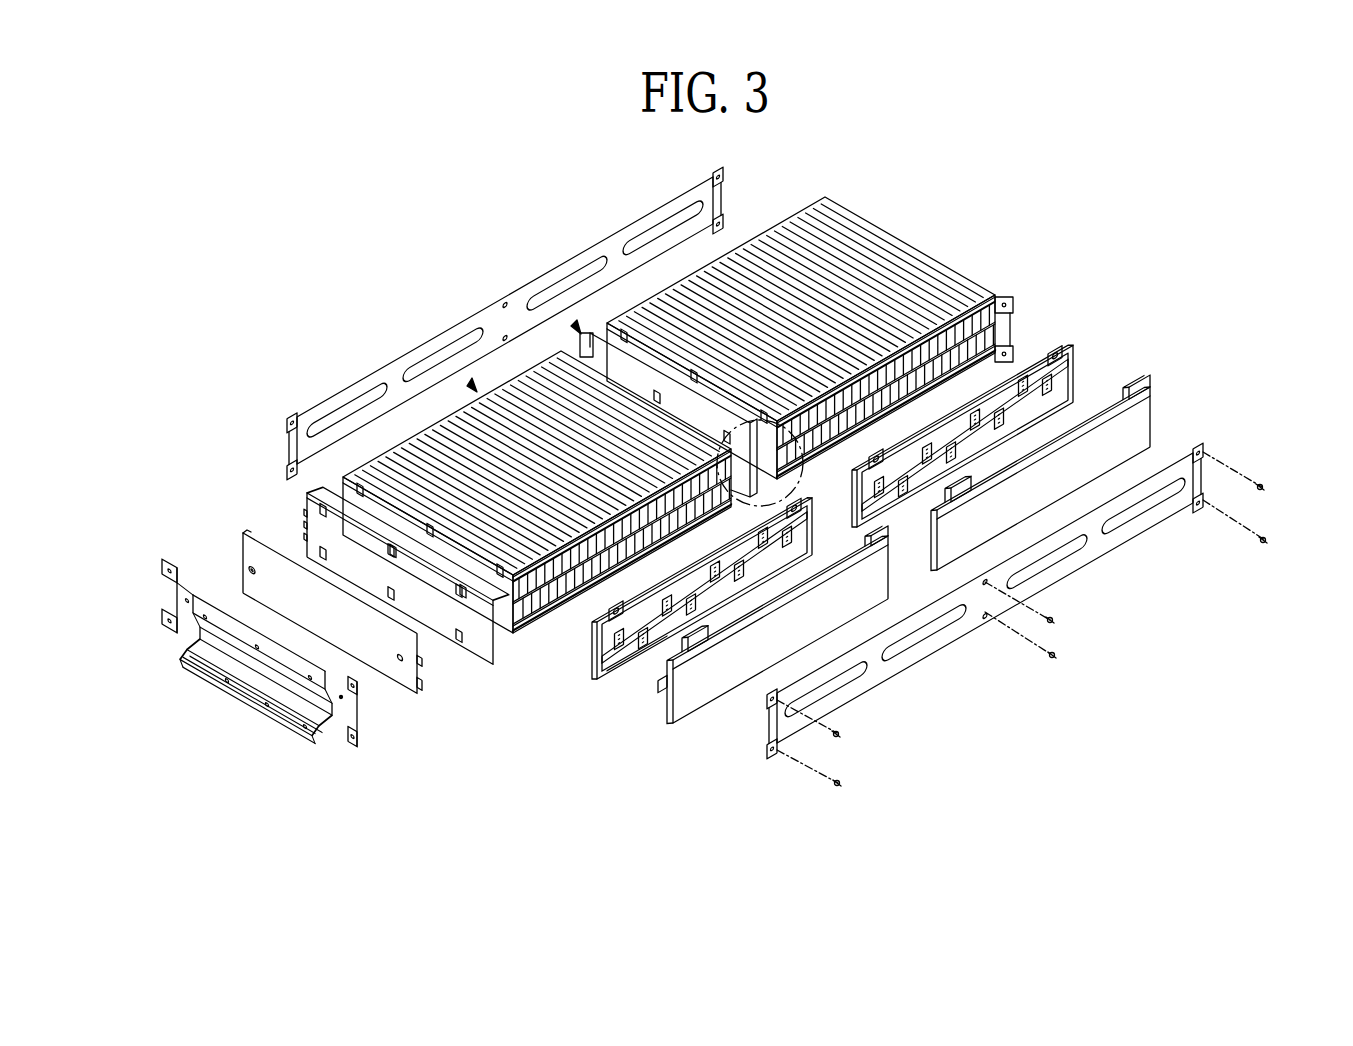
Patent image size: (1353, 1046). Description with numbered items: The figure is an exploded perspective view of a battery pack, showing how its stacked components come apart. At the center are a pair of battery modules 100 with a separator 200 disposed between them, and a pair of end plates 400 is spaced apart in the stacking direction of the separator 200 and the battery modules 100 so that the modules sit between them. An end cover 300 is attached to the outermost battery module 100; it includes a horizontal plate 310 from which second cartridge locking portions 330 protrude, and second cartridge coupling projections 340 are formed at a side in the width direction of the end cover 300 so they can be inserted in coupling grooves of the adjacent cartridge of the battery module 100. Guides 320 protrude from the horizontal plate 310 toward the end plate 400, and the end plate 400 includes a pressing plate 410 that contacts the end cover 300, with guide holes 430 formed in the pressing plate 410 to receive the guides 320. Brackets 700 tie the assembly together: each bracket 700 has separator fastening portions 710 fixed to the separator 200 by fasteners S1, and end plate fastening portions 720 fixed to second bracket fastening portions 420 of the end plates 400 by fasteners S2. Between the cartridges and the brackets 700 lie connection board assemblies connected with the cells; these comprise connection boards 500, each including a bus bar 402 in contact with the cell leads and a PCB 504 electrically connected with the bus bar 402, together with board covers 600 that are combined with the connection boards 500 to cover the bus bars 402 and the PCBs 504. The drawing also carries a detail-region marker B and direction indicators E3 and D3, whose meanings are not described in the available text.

The battery module 100 is at (322, 487).
The separator 200 is at (590, 333).
The end cover 300 is at (320, 602).
The horizontal plate 310 is at (385, 665).
The guide 320 is at (249, 568).
The second cartridge locking portion 330 is at (420, 660).
The second cartridge coupling projection 340 is at (244, 533).
The end plate 400 is at (589, 490).
The bus bar 402 is at (637, 666).
The pressing plate 410 is at (350, 705).
The second bracket fastening portion 420 is at (163, 625).
The guide hole 430 is at (341, 699).
The connection board 500 is at (839, 532).
The PCB 504 is at (610, 630).
The board cover 600 is at (688, 690).
The bracket 700 is at (783, 482).
The separator fastening portion 710 is at (985, 582).
The end plate fastening portion 720 is at (1203, 452).
The fastener S1 is at (1055, 657).
The fastener S2 is at (1263, 489).
The detail region B is at (768, 463).
The end portion direction E3 is at (576, 328).
The direction D3 is at (472, 386).